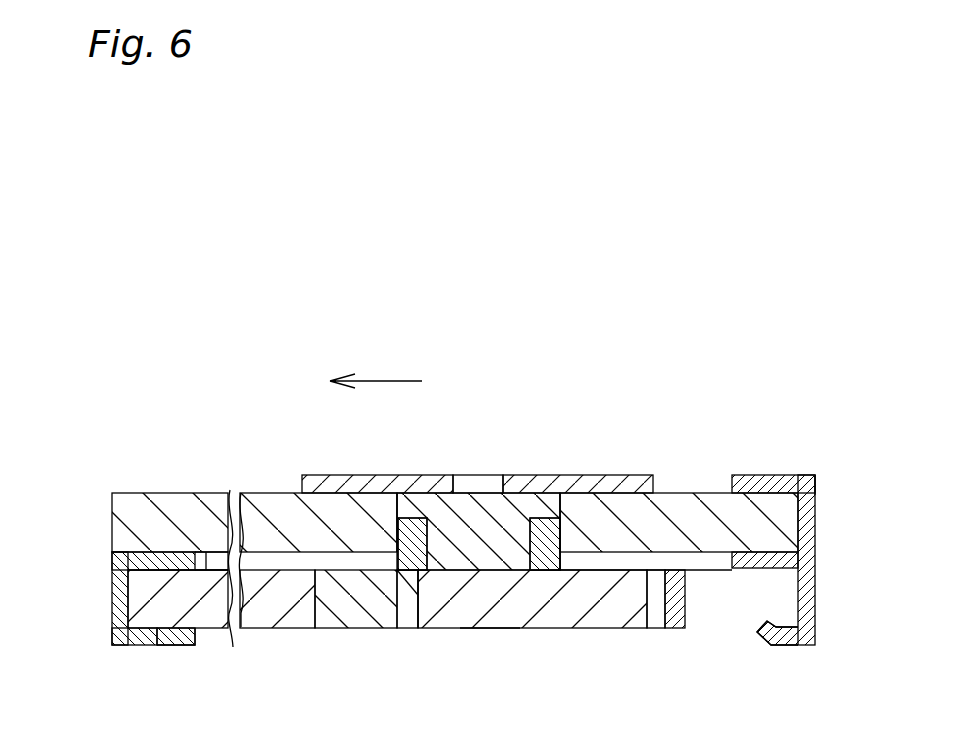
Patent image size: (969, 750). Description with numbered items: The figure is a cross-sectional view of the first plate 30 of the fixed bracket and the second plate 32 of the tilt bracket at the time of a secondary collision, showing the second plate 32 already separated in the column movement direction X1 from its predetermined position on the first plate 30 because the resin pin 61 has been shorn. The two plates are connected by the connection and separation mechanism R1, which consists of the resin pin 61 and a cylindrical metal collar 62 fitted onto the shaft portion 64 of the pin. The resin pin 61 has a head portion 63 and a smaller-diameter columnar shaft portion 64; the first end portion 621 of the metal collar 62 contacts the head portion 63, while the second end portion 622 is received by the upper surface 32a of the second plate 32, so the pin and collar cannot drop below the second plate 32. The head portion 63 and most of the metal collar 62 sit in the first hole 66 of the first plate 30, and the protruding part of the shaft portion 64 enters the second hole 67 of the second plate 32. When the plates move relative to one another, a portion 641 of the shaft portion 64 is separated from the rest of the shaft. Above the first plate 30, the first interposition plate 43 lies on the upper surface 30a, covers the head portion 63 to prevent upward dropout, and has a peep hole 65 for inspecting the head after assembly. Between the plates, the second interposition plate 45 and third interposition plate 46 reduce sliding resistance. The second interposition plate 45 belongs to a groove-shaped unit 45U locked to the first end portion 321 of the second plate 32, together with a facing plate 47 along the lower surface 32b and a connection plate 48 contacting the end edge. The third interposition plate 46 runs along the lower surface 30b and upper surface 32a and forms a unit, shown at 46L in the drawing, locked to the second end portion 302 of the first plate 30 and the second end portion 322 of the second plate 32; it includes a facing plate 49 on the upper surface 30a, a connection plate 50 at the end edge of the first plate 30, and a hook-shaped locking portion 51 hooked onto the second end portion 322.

The first plate 30 is at (173, 488).
The upper surface of the first plate 30a is at (688, 505).
The lower surface of the first plate 30b is at (233, 628).
The second end portion of the first plate 302 is at (788, 542).
The second plate 32 is at (619, 634).
The upper surface of the second plate 32a is at (178, 568).
The lower surface of the second plate 32b is at (155, 646).
The first end portion of the second plate 321 is at (142, 605).
The second end portion of the second plate 322 is at (681, 597).
The first interposition plate 43 is at (578, 484).
The second interposition plate 45 is at (148, 560).
The groove-shaped unit 45U is at (106, 573).
The third interposition plate 46 is at (746, 551).
The holder lower portion 46L is at (824, 486).
The facing plate 47 is at (180, 643).
The connection plate 48 is at (123, 600).
The facing plate 49 is at (773, 480).
The connection plate 50 is at (818, 511).
The locking portion 51 is at (795, 641).
The resin pin 61 is at (357, 634).
The metal collar 62 is at (553, 533).
The head portion 63 is at (544, 517).
The shaft portion 64 is at (507, 557).
The portion of the shaft portion 641 is at (327, 620).
The peep hole 65 is at (480, 486).
The first hole 66 is at (397, 530).
The second hole 67 is at (418, 612).
The first end portion of the metal collar 621 is at (414, 517).
The second end portion of the metal collar 622 is at (400, 572).
The connection and separation mechanism R1 is at (491, 642).
The column movement direction X1 is at (381, 380).